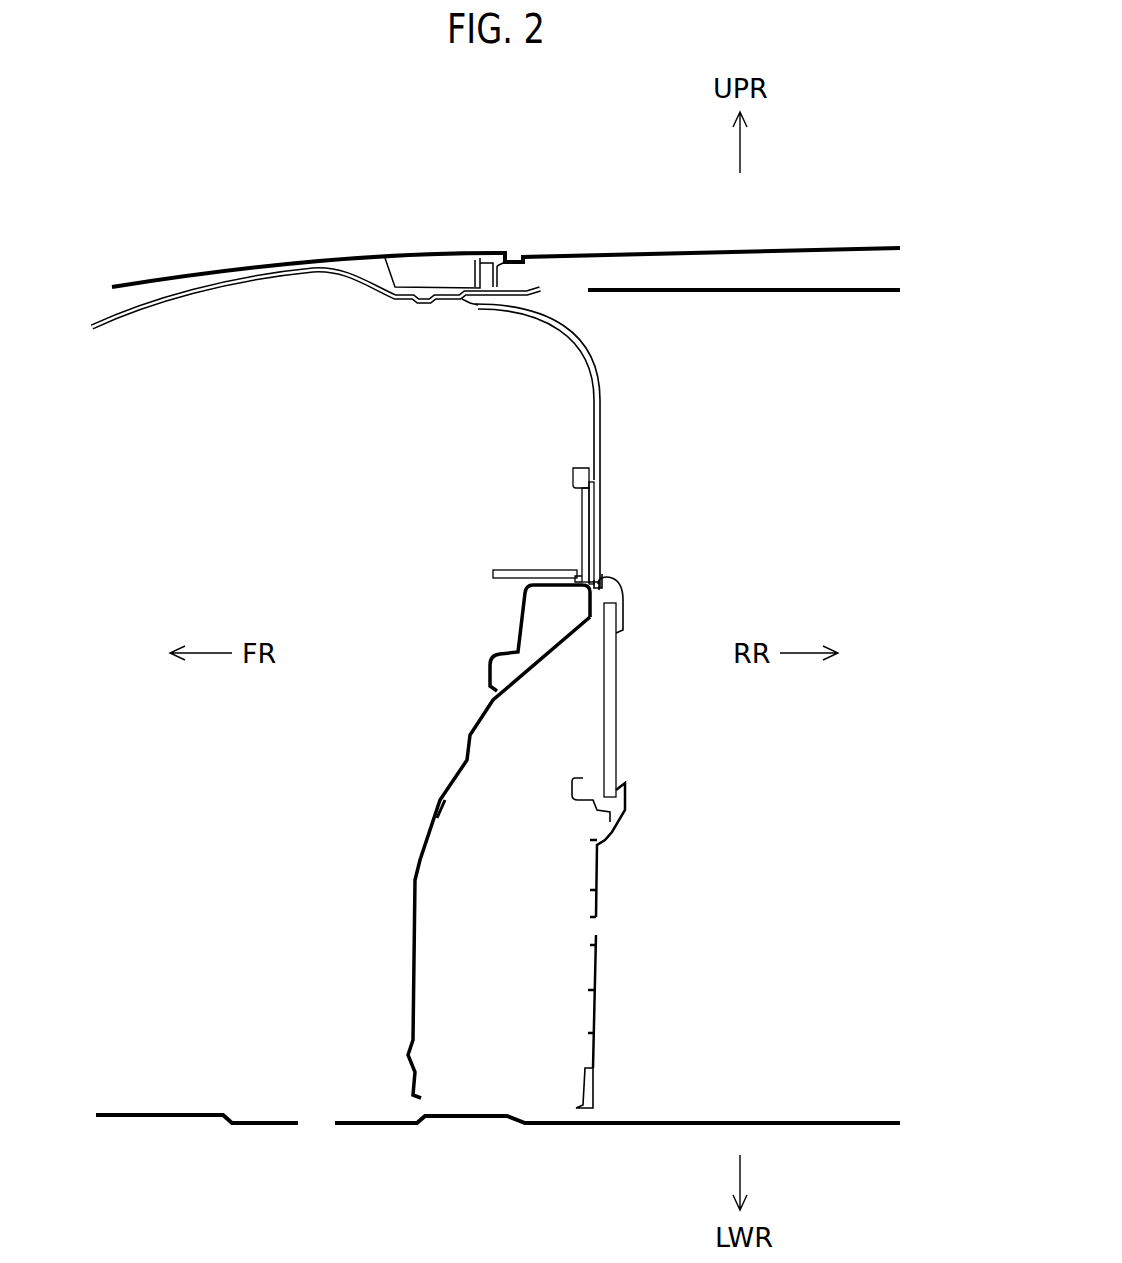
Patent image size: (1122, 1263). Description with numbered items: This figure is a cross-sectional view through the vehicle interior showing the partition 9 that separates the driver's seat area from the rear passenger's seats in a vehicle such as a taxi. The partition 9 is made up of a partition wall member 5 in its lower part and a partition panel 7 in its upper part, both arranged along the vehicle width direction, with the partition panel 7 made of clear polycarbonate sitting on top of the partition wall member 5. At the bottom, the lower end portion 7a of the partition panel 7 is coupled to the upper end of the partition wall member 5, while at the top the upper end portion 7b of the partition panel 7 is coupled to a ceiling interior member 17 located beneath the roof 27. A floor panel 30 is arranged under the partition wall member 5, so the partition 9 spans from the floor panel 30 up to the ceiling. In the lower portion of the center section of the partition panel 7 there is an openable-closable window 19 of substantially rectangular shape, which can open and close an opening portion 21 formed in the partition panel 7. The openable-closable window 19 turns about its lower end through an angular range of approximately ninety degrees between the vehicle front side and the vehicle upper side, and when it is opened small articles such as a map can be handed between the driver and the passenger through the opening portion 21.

The roof 27 is at (213, 268).
The ceiling interior member 17 is at (790, 292).
The partition panel 7 is at (620, 379).
The upper end portion 7b is at (472, 308).
The lower end portion 7a is at (603, 585).
The opening portion 21 is at (594, 522).
The openable-closable window 19 is at (585, 540).
The partition 9 is at (430, 752).
The partition wall member 5 is at (597, 865).
The floor panel 30 is at (752, 1120).